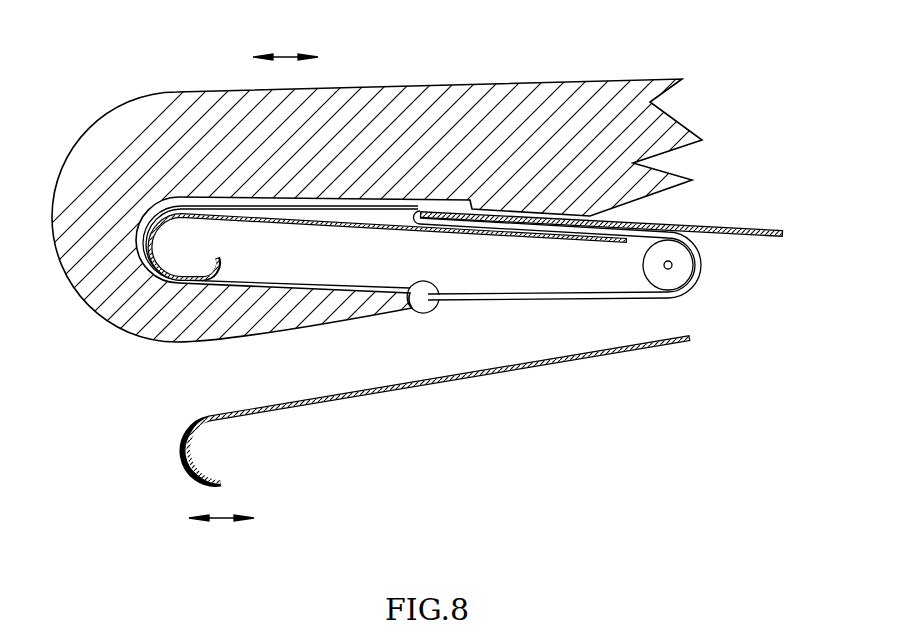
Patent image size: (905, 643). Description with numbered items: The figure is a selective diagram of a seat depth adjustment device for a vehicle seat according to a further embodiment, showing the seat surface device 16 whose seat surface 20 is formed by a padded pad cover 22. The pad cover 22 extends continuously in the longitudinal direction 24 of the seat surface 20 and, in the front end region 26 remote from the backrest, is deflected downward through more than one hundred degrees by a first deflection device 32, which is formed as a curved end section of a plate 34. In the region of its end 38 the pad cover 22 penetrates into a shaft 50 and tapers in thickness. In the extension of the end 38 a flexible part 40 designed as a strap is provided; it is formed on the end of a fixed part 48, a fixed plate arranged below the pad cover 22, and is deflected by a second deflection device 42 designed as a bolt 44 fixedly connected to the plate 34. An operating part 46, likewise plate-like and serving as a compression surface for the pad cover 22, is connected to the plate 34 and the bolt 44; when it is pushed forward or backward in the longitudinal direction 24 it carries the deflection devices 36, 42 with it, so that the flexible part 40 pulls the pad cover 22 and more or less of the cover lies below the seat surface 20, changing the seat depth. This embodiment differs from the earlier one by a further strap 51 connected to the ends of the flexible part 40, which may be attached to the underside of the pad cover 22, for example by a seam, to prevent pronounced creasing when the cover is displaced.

The seat surface device 16 is at (773, 167).
The seat surface 20 is at (470, 82).
The pad cover 22 is at (568, 95).
The longitudinal direction 24 is at (286, 55).
The front end region 26 is at (163, 350).
The first deflection device 32 is at (142, 296).
The plate 34 is at (195, 219).
The deflection device 36 is at (158, 268).
The end of the pad cover 38 is at (427, 313).
The flexible part 40 is at (647, 233).
The second deflection device 42 is at (708, 287).
The bolt 44 is at (688, 263).
The operating part 46 is at (382, 390).
The fixed part 48 is at (755, 228).
The shaft 50 is at (100, 333).
The further strap 51 is at (305, 196).